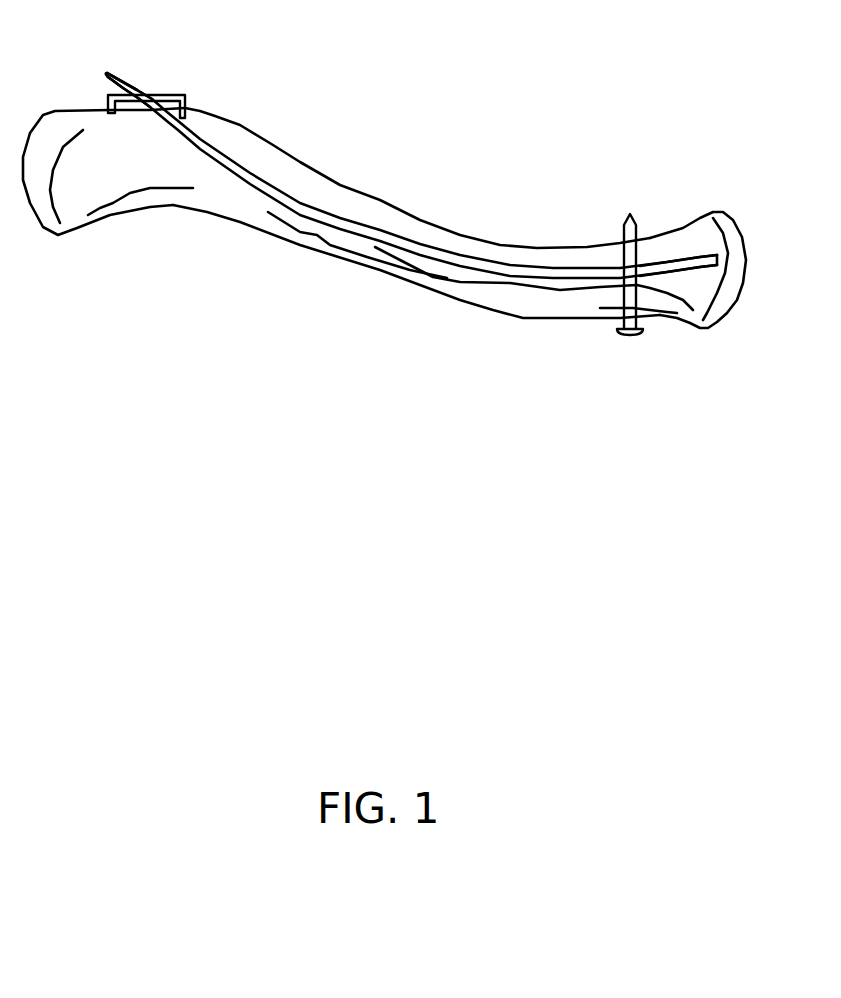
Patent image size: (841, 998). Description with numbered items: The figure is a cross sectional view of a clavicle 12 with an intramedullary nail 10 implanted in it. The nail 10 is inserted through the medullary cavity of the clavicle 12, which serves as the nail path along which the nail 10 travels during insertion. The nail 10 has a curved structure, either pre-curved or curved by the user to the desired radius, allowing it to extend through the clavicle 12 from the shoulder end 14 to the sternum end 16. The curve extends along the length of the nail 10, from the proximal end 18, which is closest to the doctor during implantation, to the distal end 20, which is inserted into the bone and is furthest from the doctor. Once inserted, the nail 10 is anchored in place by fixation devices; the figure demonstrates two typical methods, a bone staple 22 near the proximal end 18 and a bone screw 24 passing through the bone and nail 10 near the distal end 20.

The intramedullary nail 10 is at (411, 175).
The clavicle 12 is at (433, 213).
The shoulder end 14 is at (108, 137).
The sternum end 16 is at (699, 297).
The proximal end 18 is at (132, 59).
The distal end 20 is at (678, 221).
The bone staple 22 is at (159, 76).
The bone screw 24 is at (627, 239).